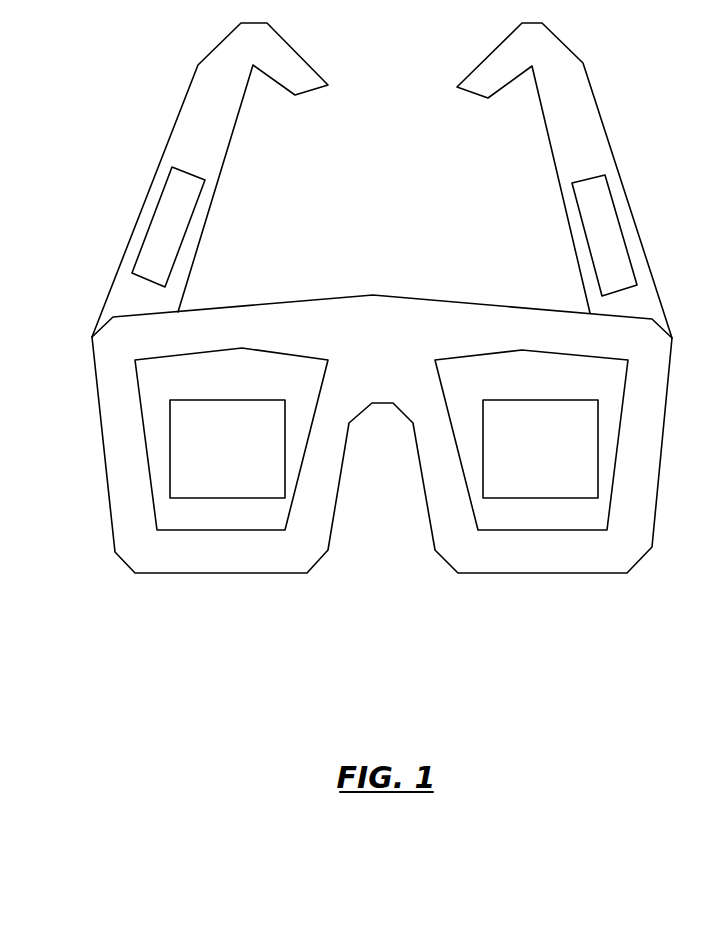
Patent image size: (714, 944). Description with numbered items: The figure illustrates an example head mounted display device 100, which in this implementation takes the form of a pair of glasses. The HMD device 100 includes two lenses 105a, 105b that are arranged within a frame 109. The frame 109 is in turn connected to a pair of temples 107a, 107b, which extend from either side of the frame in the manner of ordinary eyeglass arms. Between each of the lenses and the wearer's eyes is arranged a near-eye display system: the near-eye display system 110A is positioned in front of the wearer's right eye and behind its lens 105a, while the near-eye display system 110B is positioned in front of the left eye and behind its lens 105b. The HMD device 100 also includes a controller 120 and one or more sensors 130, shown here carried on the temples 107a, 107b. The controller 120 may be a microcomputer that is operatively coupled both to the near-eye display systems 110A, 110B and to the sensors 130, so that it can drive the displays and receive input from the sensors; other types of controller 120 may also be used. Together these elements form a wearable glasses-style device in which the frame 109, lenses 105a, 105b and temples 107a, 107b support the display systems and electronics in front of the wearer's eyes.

The head mounted display device 100 is at (382, 362).
The lens 105a is at (231, 439).
The lens 105b is at (531, 440).
The temple 107a is at (210, 180).
The temple 107b is at (564, 180).
The frame 109 is at (382, 434).
The near-eye display system 110A is at (227, 449).
The near-eye display system 110B is at (540, 449).
The controller 120 is at (168, 227).
The sensors 130 is at (604, 235).